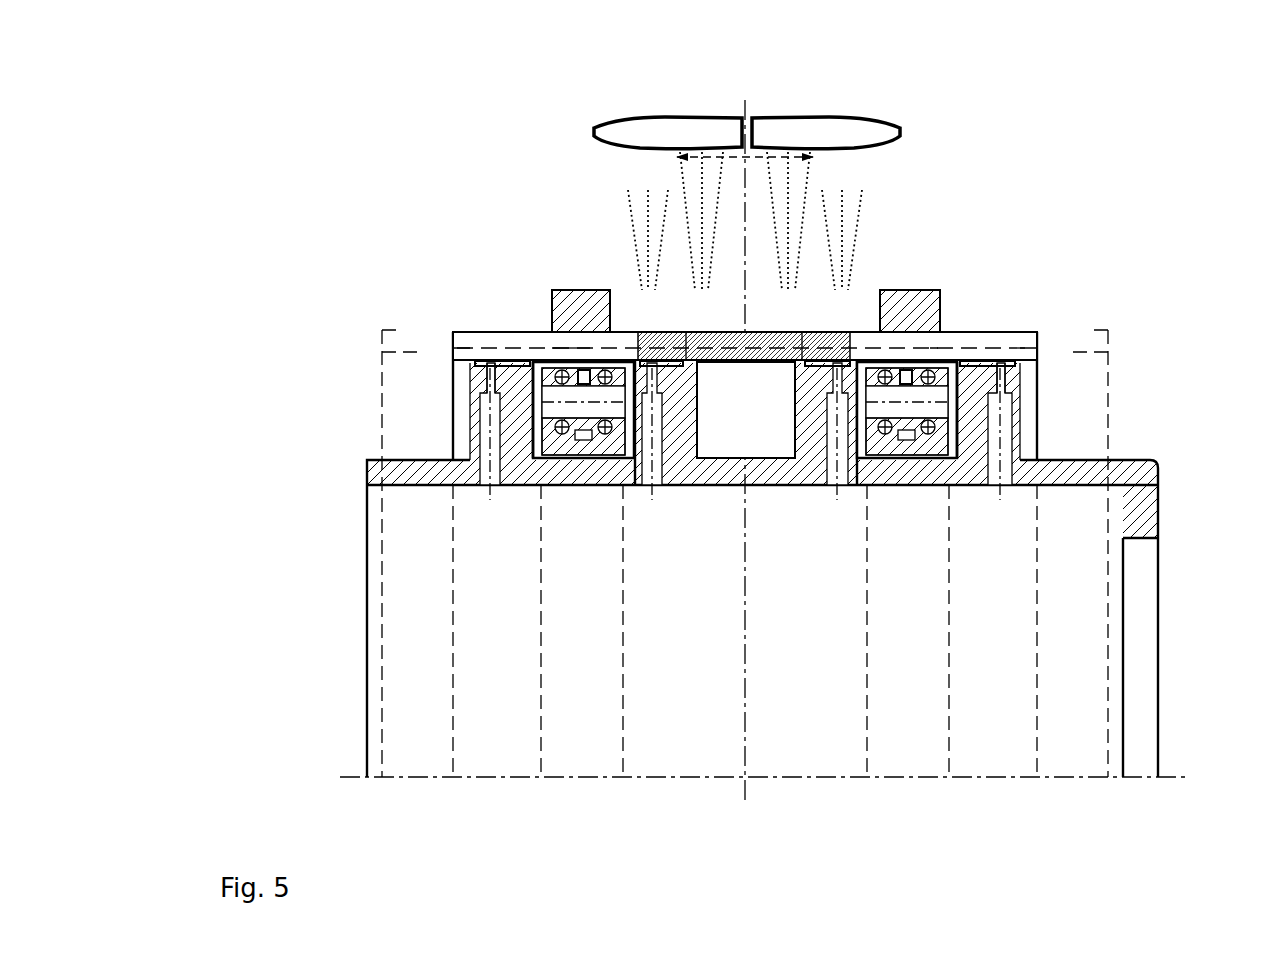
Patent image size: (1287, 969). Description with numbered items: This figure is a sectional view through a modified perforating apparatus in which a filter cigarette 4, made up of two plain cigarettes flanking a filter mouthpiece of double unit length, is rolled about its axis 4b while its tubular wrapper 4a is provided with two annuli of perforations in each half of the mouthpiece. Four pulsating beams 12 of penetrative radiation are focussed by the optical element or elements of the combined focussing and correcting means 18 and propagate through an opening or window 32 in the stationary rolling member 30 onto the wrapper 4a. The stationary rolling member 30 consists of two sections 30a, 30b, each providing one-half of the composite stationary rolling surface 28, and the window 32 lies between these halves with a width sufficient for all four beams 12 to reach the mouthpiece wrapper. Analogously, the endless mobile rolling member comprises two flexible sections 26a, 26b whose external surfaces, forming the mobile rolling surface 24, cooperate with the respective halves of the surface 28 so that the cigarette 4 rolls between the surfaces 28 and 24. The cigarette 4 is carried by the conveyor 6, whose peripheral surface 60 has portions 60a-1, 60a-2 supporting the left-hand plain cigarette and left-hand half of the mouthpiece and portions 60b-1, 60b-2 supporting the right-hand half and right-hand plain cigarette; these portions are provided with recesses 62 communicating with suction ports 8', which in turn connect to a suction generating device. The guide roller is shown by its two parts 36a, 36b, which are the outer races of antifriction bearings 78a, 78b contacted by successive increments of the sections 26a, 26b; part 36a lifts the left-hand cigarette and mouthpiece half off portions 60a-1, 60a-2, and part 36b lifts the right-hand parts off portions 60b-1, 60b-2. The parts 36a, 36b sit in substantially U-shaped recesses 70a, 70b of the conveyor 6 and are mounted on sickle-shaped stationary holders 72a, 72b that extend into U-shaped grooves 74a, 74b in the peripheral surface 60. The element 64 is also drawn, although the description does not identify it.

The conveyor 6 is at (372, 472).
The U-shaped recess 70a is at (588, 458).
The U-shaped recess 70b is at (905, 440).
The suction port 8' is at (804, 610).
The recess 62 is at (475, 362).
The U-shaped groove 74a is at (628, 458).
The U-shaped groove 74b is at (953, 447).
The endless section of mobile rolling member 26a is at (587, 365).
The endless section of mobile rolling member 26b is at (902, 368).
The part of guide roller 36a is at (535, 367).
The part of guide roller 36b is at (940, 408).
The antifriction bearing 78a is at (565, 455).
The antifriction bearing 78b is at (952, 447).
The sickle-shaped stationary holder 72a is at (542, 485).
The sickle-shaped stationary holder 72b is at (927, 443).
The bolt 64 is at (487, 410).
The rolling surface 24 is at (497, 340).
The opening or window 32 is at (628, 203).
The axis of cigarette 4b is at (858, 203).
The section of stationary rolling member 30a is at (560, 300).
The section of stationary rolling member 30b is at (928, 300).
The combined focussing and correcting means 18 is at (842, 118).
The pulsed beam 12 is at (675, 165).
The portion of peripheral surface 60a-2 is at (688, 348).
The portion of peripheral surface 60b-1 is at (800, 348).
The peripheral surface 60 is at (473, 327).
The stationary rolling surface 28 is at (552, 350).
The stationary rolling member 30 is at (1013, 293).
The tubular wrapper 4a is at (468, 348).
The filter cigarette 4 is at (580, 337).
The portion of peripheral surface 60a-1 is at (466, 328).
The portion of peripheral surface 60b-2 is at (1040, 331).